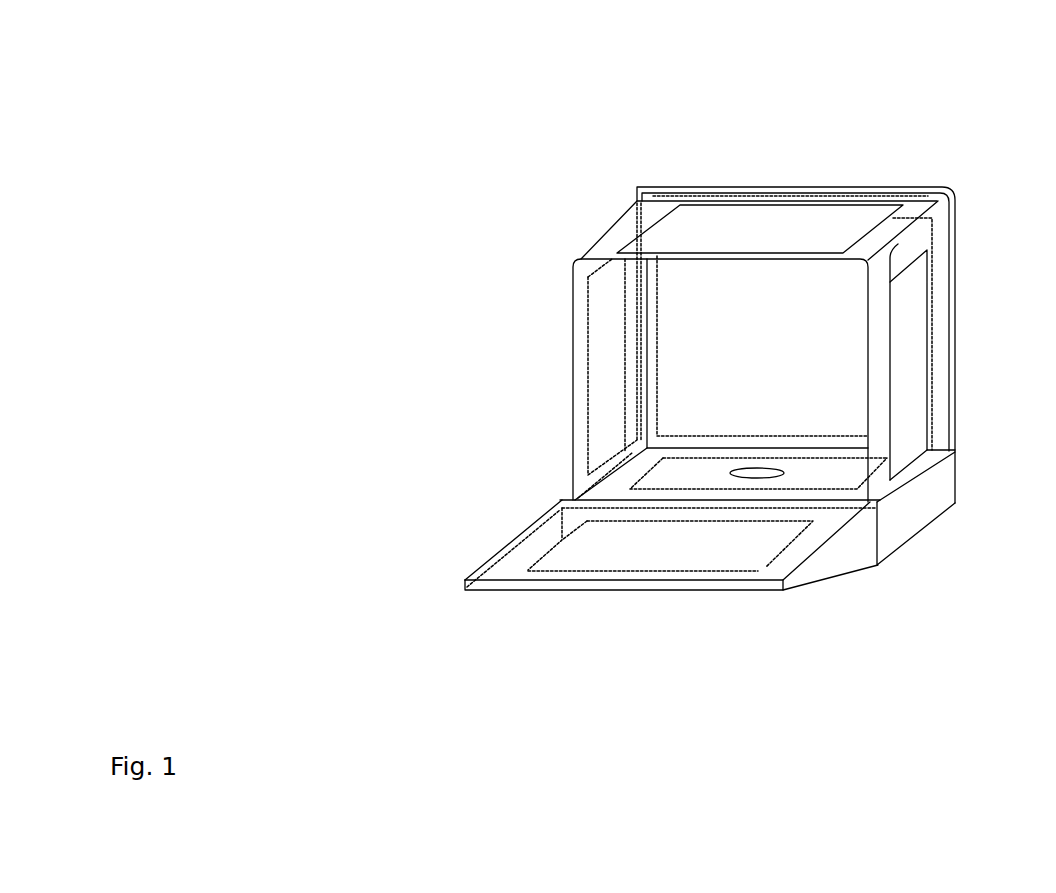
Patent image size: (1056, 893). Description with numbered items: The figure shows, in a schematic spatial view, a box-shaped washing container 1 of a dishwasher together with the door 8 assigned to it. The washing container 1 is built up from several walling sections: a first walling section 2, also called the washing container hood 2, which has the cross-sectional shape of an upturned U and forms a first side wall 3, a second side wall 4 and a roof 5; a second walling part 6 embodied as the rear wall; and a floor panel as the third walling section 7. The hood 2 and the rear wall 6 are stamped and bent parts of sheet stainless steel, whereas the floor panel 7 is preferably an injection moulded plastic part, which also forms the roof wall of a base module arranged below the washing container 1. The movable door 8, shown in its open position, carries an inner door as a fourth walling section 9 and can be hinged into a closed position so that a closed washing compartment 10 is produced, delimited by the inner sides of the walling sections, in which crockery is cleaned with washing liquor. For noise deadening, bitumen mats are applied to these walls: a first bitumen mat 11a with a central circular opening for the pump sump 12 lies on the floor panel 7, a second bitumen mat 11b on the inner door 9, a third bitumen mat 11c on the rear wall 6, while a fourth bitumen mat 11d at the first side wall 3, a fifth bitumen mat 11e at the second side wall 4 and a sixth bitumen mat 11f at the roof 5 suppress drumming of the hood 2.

The washing container 1 is at (968, 100).
The first walling section 2 is at (612, 223).
The first side wall 3 is at (927, 238).
The second side wall 4 is at (572, 372).
The roof 5 is at (664, 207).
The second walling part 6 is at (755, 280).
The third walling section 7 is at (860, 565).
The door 8 is at (425, 486).
The fourth walling section 9 is at (527, 562).
The washing compartment 10 is at (824, 316).
The first bitumen mat 11a is at (730, 457).
The second bitumen mat 11b is at (575, 535).
The third bitumen mat 11c is at (657, 358).
The fourth bitumen mat 11d is at (927, 427).
The fifth bitumen mat 11e is at (585, 438).
The sixth bitumen mat 11f is at (657, 222).
The pump sump 12 is at (762, 468).